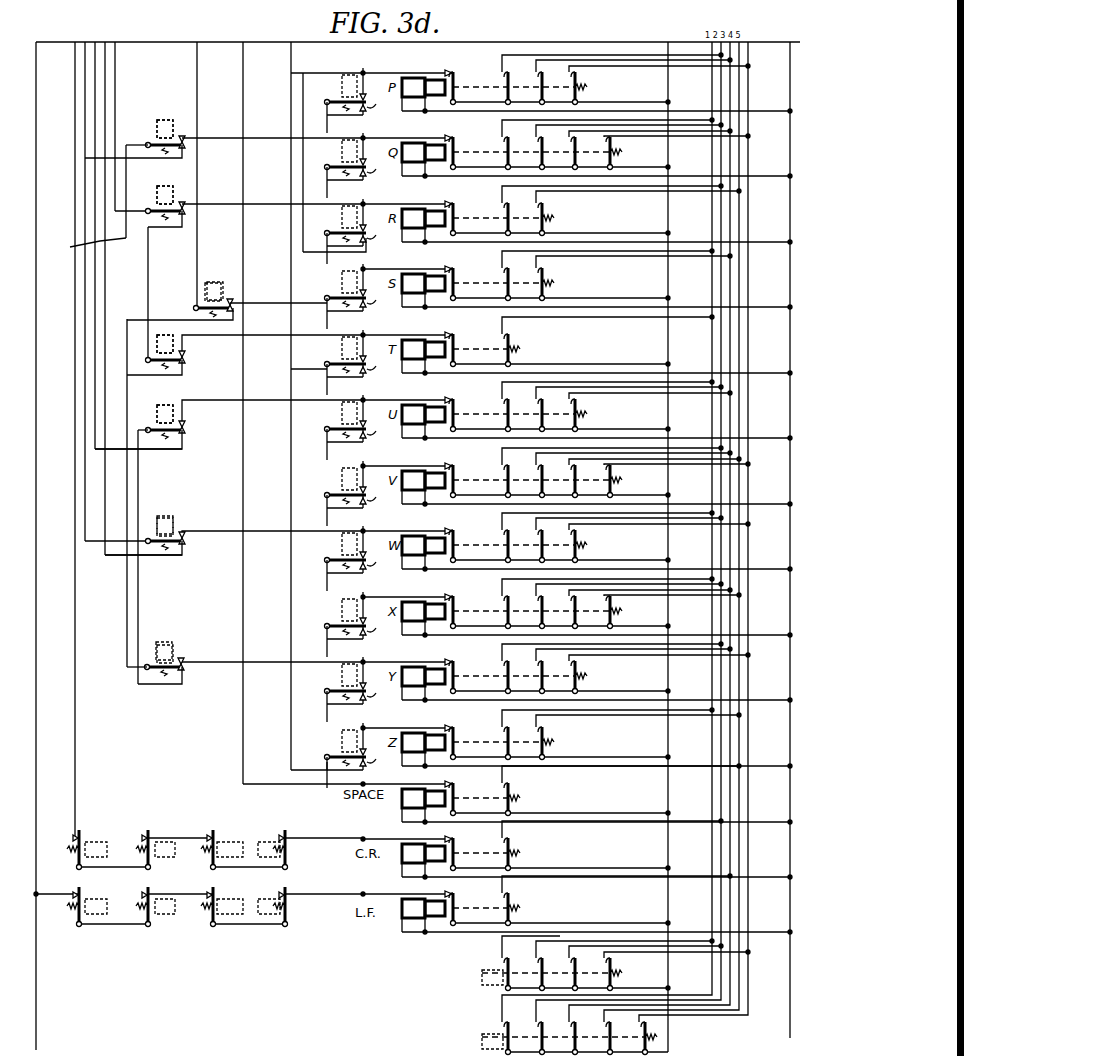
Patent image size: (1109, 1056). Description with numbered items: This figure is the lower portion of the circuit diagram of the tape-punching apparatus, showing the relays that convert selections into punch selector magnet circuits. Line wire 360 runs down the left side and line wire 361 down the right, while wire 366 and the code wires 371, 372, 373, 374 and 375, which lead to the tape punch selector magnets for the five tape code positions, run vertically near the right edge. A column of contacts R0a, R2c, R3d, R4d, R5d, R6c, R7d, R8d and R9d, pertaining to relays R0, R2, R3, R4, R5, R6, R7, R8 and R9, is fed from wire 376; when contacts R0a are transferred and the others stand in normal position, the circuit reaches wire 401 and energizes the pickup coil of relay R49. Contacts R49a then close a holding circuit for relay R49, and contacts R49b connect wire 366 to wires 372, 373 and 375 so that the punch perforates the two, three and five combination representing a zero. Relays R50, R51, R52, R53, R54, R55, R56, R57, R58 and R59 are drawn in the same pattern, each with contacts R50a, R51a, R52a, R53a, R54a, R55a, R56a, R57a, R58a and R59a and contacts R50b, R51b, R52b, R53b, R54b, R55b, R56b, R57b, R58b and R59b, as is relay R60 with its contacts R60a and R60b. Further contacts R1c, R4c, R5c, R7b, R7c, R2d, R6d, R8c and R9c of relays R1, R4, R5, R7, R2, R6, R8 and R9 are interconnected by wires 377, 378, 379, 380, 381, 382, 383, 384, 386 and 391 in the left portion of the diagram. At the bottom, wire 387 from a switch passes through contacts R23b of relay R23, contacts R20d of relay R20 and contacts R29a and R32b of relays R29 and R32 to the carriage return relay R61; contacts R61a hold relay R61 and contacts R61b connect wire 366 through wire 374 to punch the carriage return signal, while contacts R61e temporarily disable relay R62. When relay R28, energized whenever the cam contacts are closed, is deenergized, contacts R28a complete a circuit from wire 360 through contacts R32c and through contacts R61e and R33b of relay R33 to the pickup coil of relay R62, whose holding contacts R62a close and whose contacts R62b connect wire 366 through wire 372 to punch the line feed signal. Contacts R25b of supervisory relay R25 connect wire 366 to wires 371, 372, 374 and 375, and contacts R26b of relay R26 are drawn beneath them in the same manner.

The wire 360 is at (52, 546).
The line wire 361 is at (790, 80).
The wire 366 is at (668, 78).
The wire 371 is at (712, 349).
The wire 372 is at (721, 414).
The wire 373 is at (723, 474).
The wire 374 is at (739, 545).
The wire 375 is at (748, 610).
The wire 376 is at (197, 62).
The conductor 377 is at (82, 200).
The conductor 378 is at (95, 177).
The conductor 379 is at (105, 65).
The conductor 380 is at (118, 95).
The conductor 381 is at (148, 252).
The conductor 382 is at (127, 592).
The conductor 383 is at (138, 472).
The conductor 384 is at (75, 95).
The conductor 386 is at (243, 88).
The wire 387 is at (85, 128).
The conductor 391 is at (291, 58).
The wire 401 is at (291, 462).
The relay R1 is at (160, 120).
The relay contact R1c is at (184, 145).
The relay R4 is at (160, 186).
The relay contact R4c is at (184, 210).
The contacts R4d is at (364, 444).
The relay R0 is at (213, 282).
The contacts R0a is at (232, 309).
The relay R5 is at (157, 341).
The relay contact R5c is at (184, 358).
The contacts R5d is at (364, 510).
The relay R7 is at (163, 405).
The relay contact R7b is at (363, 117).
The relay contact R7c is at (183, 421).
The contacts R7d is at (364, 641).
The relay R2 is at (165, 518).
The contacts R2c is at (363, 313).
The relay contact R2d is at (181, 541).
The relay R6 is at (164, 645).
The contacts R6c is at (363, 575).
The relay contact R6d is at (181, 671).
The relay R8 is at (349, 401).
The relay contact R8c is at (363, 182).
The contacts R8d is at (364, 706).
The relay R9 is at (349, 467).
The relay contact R9c is at (363, 248).
The contacts R9d is at (364, 772).
The relay R3 is at (349, 336).
The contacts R3d is at (364, 379).
The relay R49 is at (576, 80).
The contacts R49a is at (474, 86).
The contacts R49b is at (602, 75).
The relay coil R50 is at (576, 145).
The relay contact R50a is at (472, 140).
The relay contacts R50b is at (604, 144).
The relay coil R51 is at (576, 211).
The relay contact R51a is at (472, 206).
The relay contacts R51b is at (599, 210).
The relay coil R52 is at (576, 276).
The relay contact R52a is at (472, 271).
The relay contacts R52b is at (617, 275).
The relay coil R53 is at (576, 342).
The relay contact R53a is at (472, 337).
The relay contact R53b is at (608, 341).
The relay coil R54 is at (576, 407).
The relay contact R54a is at (472, 402).
The relay contacts R54b is at (595, 406).
The relay coil R55 is at (576, 473).
The relay contact R55a is at (472, 468).
The relay contacts R55b is at (604, 472).
The relay coil R56 is at (576, 538).
The relay contact R56a is at (472, 533).
The relay contacts R56b is at (604, 537).
The relay coil R57 is at (576, 604).
The relay contact R57a is at (472, 599).
The relay contacts R57b is at (599, 603).
The relay coil R58 is at (576, 669).
The relay contact R58a is at (472, 664).
The relay contacts R58b is at (604, 668).
The relay coil R59 is at (576, 735).
The relay contact R59a is at (472, 730).
The relay contacts R59b is at (621, 734).
The space relay coil R60 is at (576, 793).
The relay contact R60a is at (472, 789).
The relay contact R60b is at (621, 790).
The carriage return relay R61 is at (414, 842).
The contacts R61a is at (472, 844).
The contacts R61b is at (612, 845).
The contacts R61e is at (233, 897).
The relay R62 is at (576, 901).
The holding contacts R62a is at (472, 899).
The contacts R62b is at (617, 900).
The supervisory relay R25 is at (467, 982).
The contacts R25b is at (592, 963).
The relay R26 is at (467, 1045).
The relay contacts R26b is at (546, 1028).
The relay R23 is at (106, 834).
The contacts R23b is at (99, 832).
The relay R20 is at (177, 834).
The contacts R20d is at (164, 832).
The relay R29 is at (238, 834).
The contacts R29a is at (227, 832).
The relay R32 is at (268, 842).
The contacts R32b is at (307, 841).
The contacts R32c is at (167, 897).
The relay R28 is at (106, 891).
The contacts R28a is at (61, 897).
The relay R33 is at (274, 928).
The contacts R33b is at (307, 897).